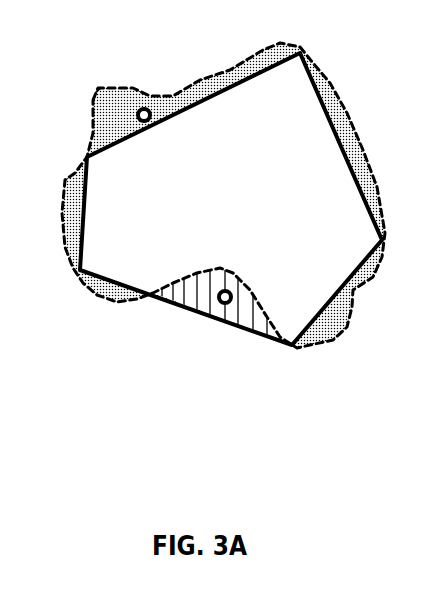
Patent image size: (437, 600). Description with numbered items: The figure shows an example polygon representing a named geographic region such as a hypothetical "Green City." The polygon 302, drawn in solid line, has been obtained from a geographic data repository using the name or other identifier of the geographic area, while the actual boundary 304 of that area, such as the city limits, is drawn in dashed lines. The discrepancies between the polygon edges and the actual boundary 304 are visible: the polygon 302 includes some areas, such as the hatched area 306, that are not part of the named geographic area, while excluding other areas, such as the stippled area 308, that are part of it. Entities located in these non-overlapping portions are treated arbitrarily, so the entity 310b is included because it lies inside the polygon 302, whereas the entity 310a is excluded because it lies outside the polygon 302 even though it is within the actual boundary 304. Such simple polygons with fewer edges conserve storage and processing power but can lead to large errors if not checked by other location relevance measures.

The polygon 302 is at (333, 122).
The actual boundary 304 is at (273, 43).
The area 306 is at (207, 297).
The area 308 is at (112, 125).
The entity 310a is at (146, 105).
The entity 310b is at (223, 307).